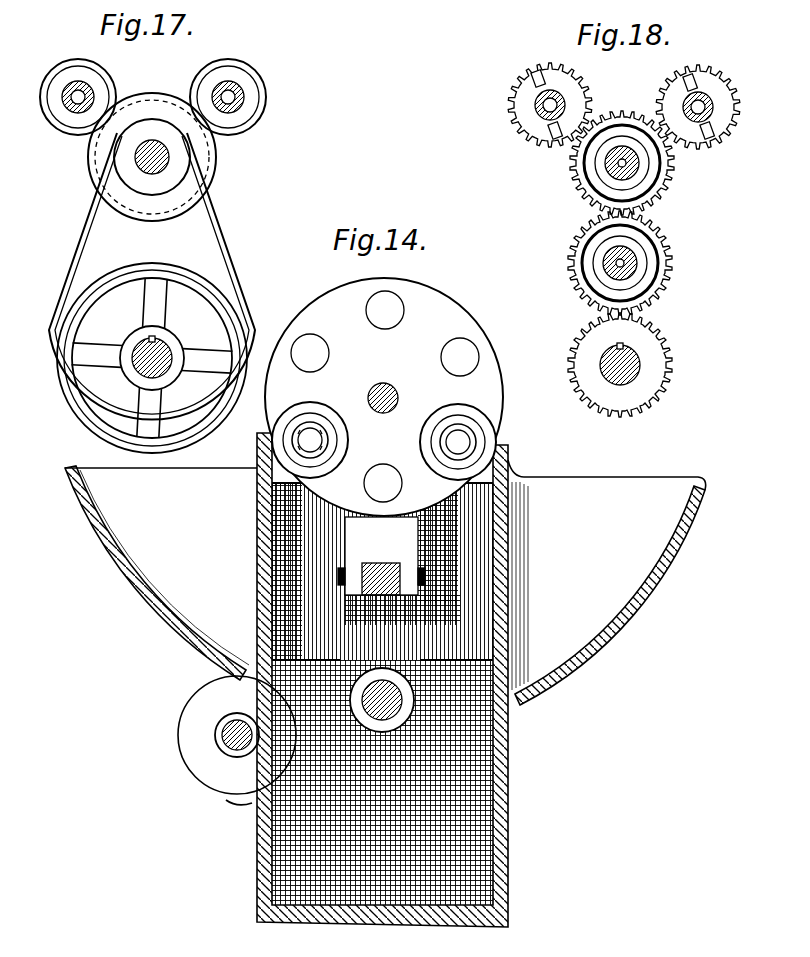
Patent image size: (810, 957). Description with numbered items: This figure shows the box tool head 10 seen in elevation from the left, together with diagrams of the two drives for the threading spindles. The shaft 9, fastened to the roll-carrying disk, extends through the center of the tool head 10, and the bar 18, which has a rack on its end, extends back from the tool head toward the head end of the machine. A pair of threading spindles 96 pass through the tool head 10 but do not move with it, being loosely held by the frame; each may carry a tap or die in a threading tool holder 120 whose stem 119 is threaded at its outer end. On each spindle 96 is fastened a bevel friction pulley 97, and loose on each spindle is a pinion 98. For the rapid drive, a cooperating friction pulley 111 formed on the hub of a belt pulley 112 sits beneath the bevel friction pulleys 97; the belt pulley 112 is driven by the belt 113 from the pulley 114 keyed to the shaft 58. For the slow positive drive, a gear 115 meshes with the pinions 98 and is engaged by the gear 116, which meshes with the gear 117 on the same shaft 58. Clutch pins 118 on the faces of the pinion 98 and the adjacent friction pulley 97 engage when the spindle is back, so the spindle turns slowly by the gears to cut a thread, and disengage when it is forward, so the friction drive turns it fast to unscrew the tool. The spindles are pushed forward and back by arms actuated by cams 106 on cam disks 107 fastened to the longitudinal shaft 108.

In FIG. 14, the shaft 9 is at (391, 384).
In FIG. 14, the box tool head 10 is at (456, 312).
In FIG. 14, the bar 18 is at (384, 562).
In FIG. 17, the shaft 58 is at (140, 348).
In FIG. 14, the shaft 58 is at (390, 690).
In FIG. 18, the shaft 58 is at (641, 365).
In FIG. 17, the threading spindles 96 is at (210, 90).
In FIG. 18, the threading spindles 96 is at (684, 104).
In FIG. 17, the bevel friction pulley 97 is at (63, 68).
In FIG. 18, the pinion 98 is at (548, 70).
In FIG. 14, the cams 106 is at (240, 806).
In FIG. 14, the cam disks 107 is at (180, 741).
In FIG. 14, the shaft 108 is at (226, 732).
In FIG. 17, the friction pulley 111 is at (214, 168).
In FIG. 17, the belt pulley 112 is at (116, 174).
In FIG. 17, the belt 113 is at (80, 238).
In FIG. 17, the pulley 114 is at (70, 288).
In FIG. 18, the gear 115 is at (668, 180).
In FIG. 18, the gear 116 is at (668, 250).
In FIG. 18, the gear 117 is at (660, 338).
In FIG. 18, the clutch pins 118 is at (530, 80).
In FIG. 17, the stem 119 is at (78, 102).
In FIG. 18, the stem 119 is at (540, 106).
In FIG. 14, the threading tool holder 120 is at (438, 441).